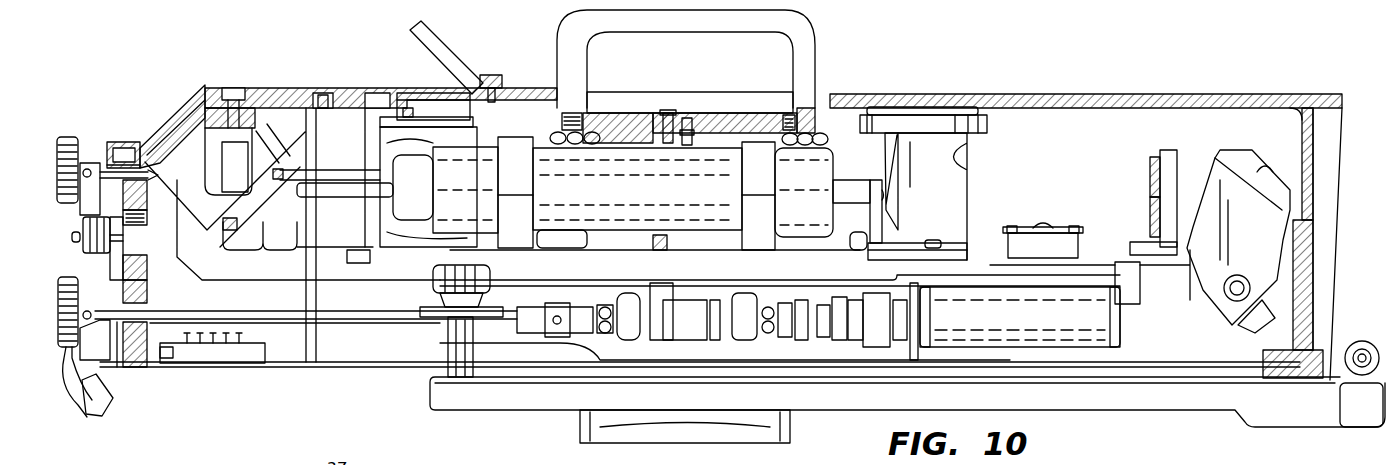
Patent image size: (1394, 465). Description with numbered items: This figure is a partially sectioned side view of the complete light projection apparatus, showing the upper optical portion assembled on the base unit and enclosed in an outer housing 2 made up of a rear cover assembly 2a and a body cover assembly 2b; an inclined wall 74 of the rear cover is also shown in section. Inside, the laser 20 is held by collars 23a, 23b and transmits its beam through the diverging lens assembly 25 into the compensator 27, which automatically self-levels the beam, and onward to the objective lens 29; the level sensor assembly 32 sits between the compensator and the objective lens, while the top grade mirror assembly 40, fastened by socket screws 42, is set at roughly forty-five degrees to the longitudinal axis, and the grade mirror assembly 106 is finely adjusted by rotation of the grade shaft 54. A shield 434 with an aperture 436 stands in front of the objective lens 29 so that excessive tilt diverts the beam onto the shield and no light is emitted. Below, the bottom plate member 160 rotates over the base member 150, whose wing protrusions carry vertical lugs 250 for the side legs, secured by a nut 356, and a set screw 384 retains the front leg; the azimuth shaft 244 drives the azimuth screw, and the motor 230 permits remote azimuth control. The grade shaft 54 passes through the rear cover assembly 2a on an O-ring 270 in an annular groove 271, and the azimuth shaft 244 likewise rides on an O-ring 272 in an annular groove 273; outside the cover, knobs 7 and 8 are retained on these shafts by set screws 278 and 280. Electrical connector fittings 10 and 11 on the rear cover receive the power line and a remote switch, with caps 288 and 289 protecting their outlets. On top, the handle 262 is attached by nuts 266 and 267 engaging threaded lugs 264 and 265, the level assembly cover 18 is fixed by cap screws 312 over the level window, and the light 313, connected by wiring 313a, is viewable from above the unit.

The outer housing 2 is at (1285, 52).
The rear cover assembly 2a is at (272, 87).
The body cover assembly 2b is at (1238, 95).
The knob 7 is at (72, 137).
The knob 8 is at (76, 285).
The electrical connector fitting 10 is at (113, 335).
The electrical connector fitting 11 is at (143, 207).
The level assembly cover 18 is at (450, 52).
The laser 20 is at (643, 196).
The collar 23a is at (515, 192).
The collar 23b is at (759, 196).
The diverging lens assembly 25 is at (874, 188).
The compensator 27 is at (941, 180).
The objective lens 29 is at (1170, 150).
The level sensor assembly 32 is at (1062, 227).
The top grade mirror assembly 40 is at (1213, 160).
The socket screws 42 is at (420, 93).
The grade shaft 54 is at (142, 190).
The inclined wall 74 is at (158, 137).
The grade mirror assembly 106 is at (1247, 322).
The base member 150 is at (625, 420).
The bottom plate member 160 is at (295, 368).
The motor 230 is at (975, 316).
The azimuth shaft 244 is at (260, 318).
The vertical lugs 250 is at (468, 352).
The handle 262 is at (808, 48).
The threaded lug 264 is at (586, 108).
The threaded lug 265 is at (812, 106).
The nut 266 is at (595, 111).
The nut 267 is at (824, 143).
The O-ring 270 is at (125, 143).
The annular groove 271 is at (130, 150).
The O-ring 272 is at (188, 342).
The annular groove 273 is at (112, 302).
The set screw 278 is at (88, 168).
The set screw 280 is at (88, 311).
The cap 288 is at (108, 290).
The cap 289 is at (110, 296).
The cap screws 312 is at (490, 75).
The light 313 is at (671, 112).
The wiring 313a is at (700, 126).
The nut 356 is at (488, 275).
The set screw 384 is at (1362, 340).
The shield 434 is at (1150, 165).
The aperture 436 is at (1150, 200).